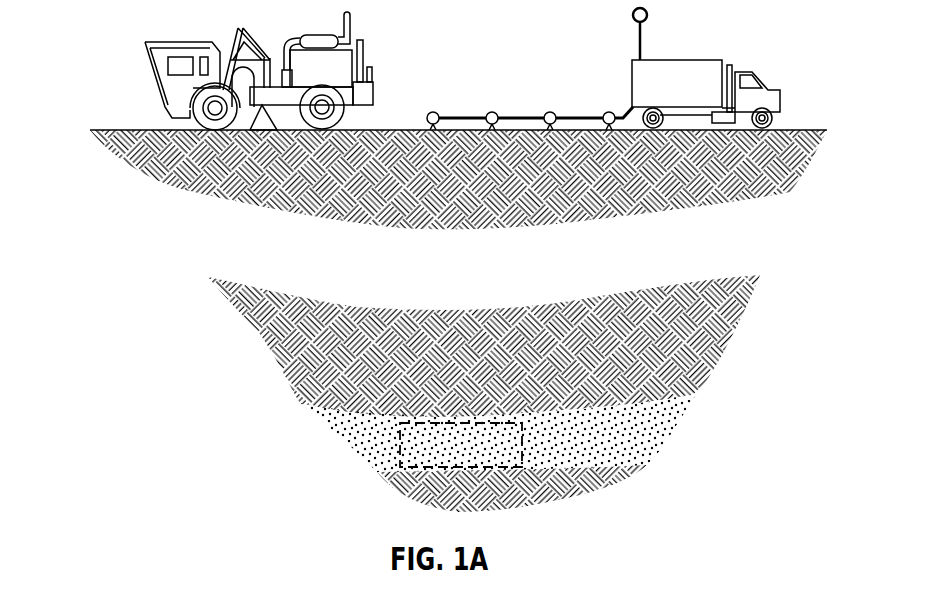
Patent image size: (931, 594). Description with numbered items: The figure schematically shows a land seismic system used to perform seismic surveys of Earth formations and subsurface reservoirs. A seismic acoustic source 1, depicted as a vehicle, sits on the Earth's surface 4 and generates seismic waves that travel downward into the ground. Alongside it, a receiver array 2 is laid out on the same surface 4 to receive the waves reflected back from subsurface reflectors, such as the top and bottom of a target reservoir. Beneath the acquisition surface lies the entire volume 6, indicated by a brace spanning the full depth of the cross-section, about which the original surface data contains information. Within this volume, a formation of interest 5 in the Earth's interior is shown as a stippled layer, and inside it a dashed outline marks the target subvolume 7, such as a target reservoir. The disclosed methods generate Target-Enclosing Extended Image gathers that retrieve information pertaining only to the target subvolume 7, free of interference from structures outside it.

The seismic acoustic source 1 is at (160, 43).
The receiver array 2 is at (460, 115).
The surface 4 is at (822, 128).
The formation of interest 5 is at (673, 412).
The entire volume 6 is at (73, 130).
The target subvolume 7 is at (400, 440).